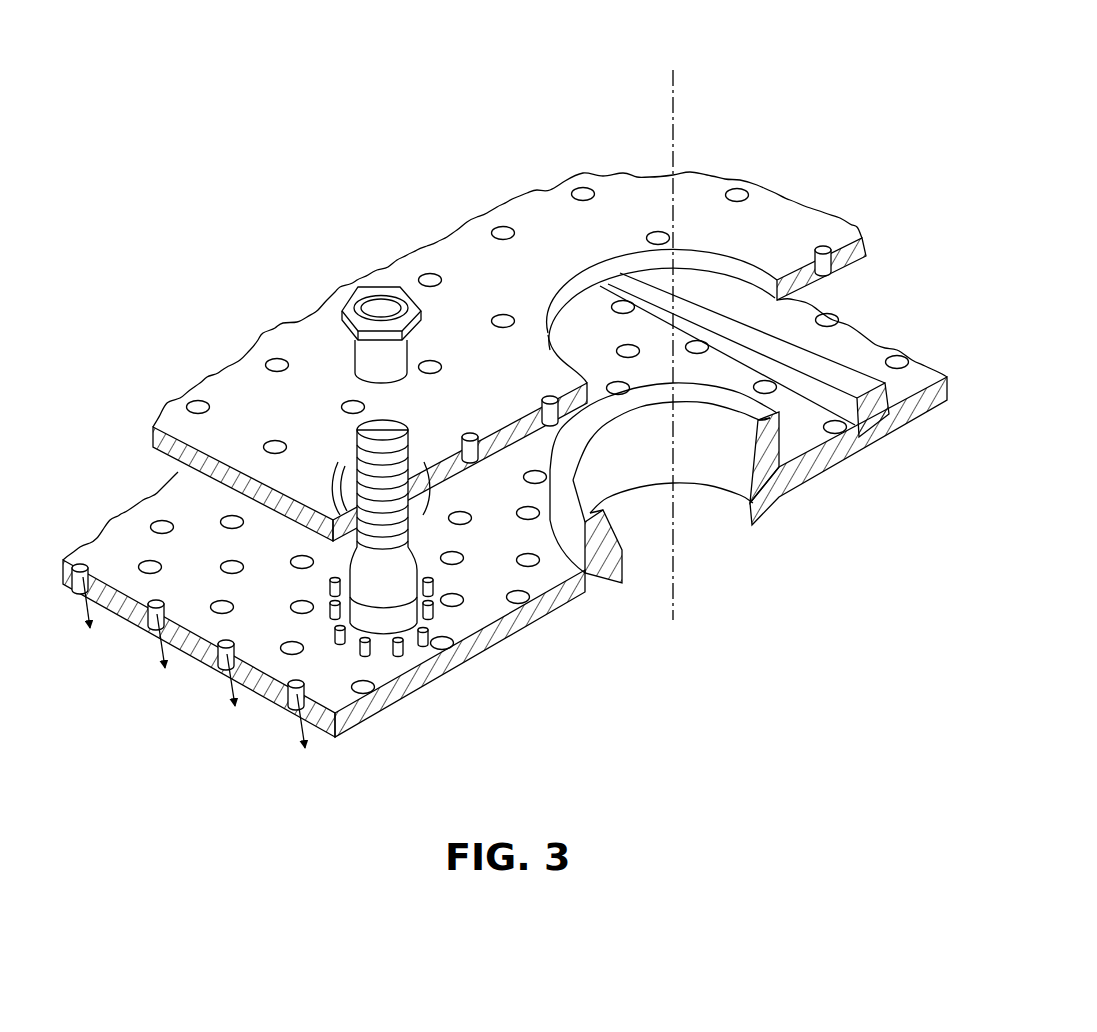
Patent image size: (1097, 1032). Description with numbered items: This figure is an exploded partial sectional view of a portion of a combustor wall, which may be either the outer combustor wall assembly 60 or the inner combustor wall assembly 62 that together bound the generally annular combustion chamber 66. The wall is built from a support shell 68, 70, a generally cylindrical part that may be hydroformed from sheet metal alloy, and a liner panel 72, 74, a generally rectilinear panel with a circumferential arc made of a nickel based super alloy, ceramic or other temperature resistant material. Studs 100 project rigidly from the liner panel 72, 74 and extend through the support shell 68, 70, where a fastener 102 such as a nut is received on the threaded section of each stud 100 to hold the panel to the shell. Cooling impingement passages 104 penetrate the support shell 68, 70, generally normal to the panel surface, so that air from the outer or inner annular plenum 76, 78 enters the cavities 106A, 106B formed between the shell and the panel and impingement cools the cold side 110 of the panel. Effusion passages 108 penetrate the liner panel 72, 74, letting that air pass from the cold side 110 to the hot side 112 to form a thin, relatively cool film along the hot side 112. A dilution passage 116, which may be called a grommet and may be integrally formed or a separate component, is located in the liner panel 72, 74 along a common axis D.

The outer combustor wall assembly 60 is at (507, 383).
The inner combustor wall assembly 62 is at (507, 383).
The combustion chamber 66 is at (664, 519).
The outer shell 68 is at (516, 312).
The inner shell 70 is at (516, 312).
The liner panel 72 is at (502, 510).
The liner panel 74 is at (502, 510).
The outer annular plenum 76 is at (507, 299).
The inner annular plenum 78 is at (254, 232).
The stud 100 is at (370, 450).
The fastener 102 is at (382, 292).
The cooling impingement passage 104 is at (505, 235).
The cavity 106A is at (173, 559).
The cavity 106B is at (123, 476).
The effusion passage 108 is at (897, 358).
The cold side 110 is at (463, 615).
The hot side 112 is at (447, 677).
The dilution passage 116 is at (693, 511).
The common axis D is at (676, 147).